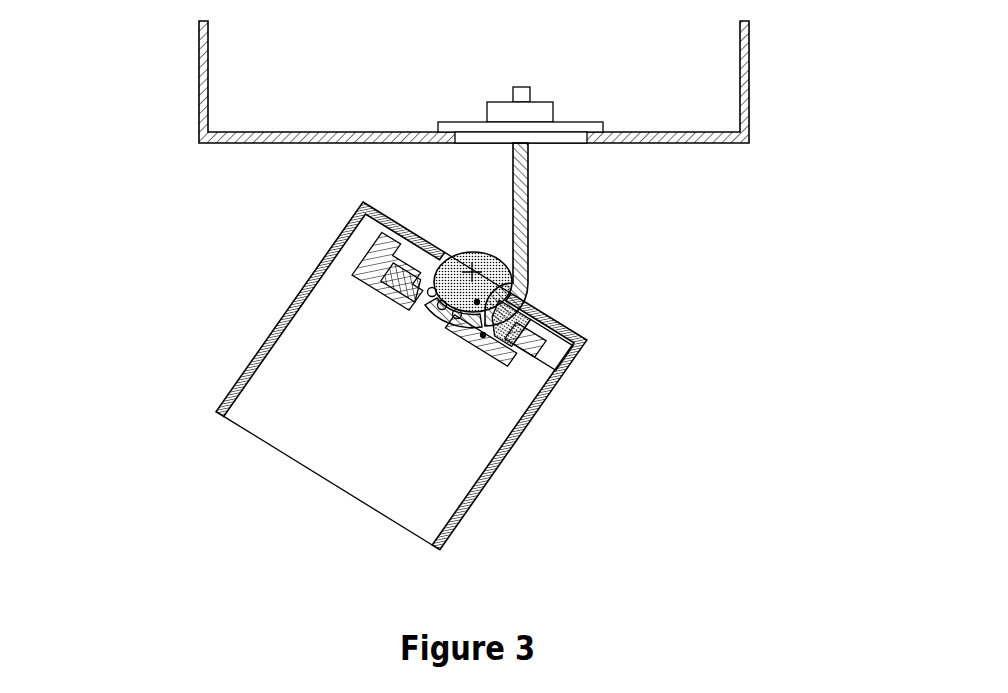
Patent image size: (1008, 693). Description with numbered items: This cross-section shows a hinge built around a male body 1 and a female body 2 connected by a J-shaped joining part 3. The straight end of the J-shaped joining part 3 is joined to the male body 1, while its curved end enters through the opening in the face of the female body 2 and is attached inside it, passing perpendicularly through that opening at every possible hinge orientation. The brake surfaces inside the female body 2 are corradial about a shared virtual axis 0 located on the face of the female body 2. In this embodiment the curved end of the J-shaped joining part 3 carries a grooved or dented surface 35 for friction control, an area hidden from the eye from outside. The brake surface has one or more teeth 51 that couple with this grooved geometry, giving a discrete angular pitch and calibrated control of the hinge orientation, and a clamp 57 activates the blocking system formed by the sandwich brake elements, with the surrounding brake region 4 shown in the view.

The male body 1 is at (188, 119).
The virtual axis 0 is at (472, 250).
The J-shaped joining part 3 is at (533, 192).
The female body 2 is at (480, 514).
The cup 4 is at (477, 302).
The clamp 57 is at (383, 257).
The grooved or dented surface 35 is at (420, 291).
The teeth 51 is at (437, 331).